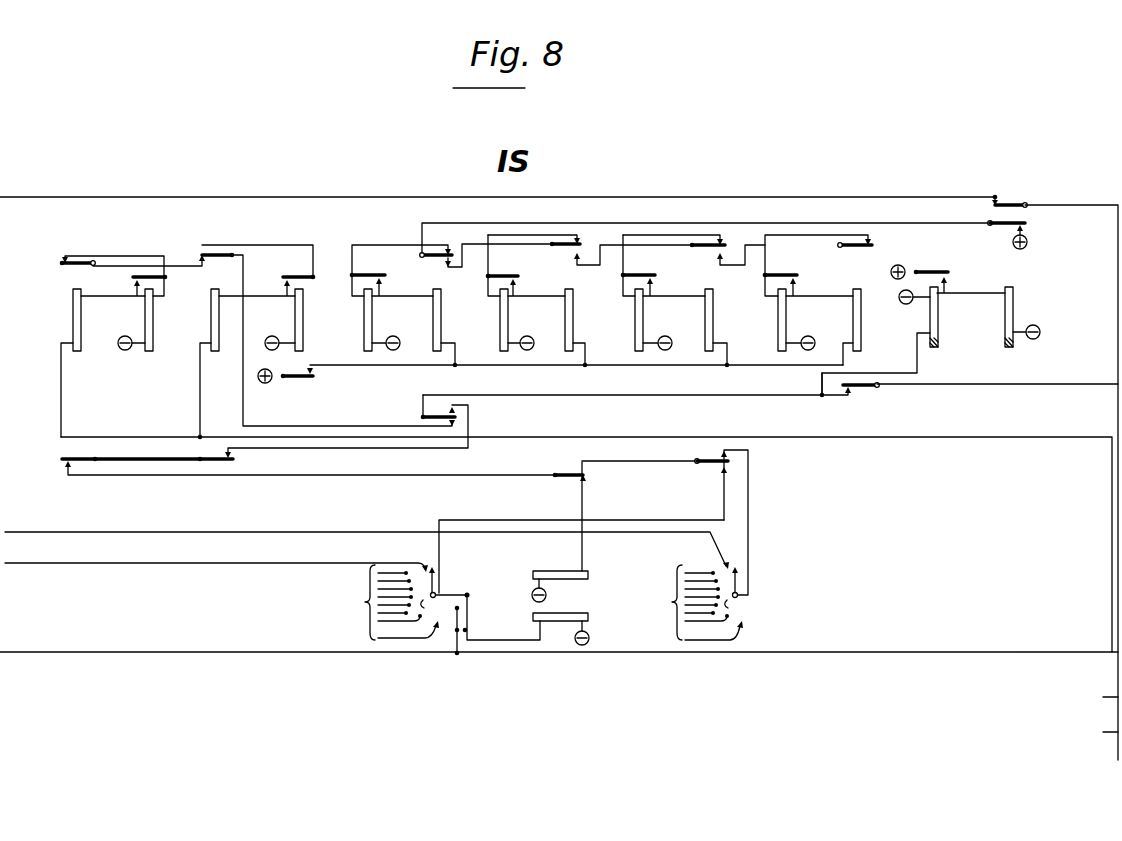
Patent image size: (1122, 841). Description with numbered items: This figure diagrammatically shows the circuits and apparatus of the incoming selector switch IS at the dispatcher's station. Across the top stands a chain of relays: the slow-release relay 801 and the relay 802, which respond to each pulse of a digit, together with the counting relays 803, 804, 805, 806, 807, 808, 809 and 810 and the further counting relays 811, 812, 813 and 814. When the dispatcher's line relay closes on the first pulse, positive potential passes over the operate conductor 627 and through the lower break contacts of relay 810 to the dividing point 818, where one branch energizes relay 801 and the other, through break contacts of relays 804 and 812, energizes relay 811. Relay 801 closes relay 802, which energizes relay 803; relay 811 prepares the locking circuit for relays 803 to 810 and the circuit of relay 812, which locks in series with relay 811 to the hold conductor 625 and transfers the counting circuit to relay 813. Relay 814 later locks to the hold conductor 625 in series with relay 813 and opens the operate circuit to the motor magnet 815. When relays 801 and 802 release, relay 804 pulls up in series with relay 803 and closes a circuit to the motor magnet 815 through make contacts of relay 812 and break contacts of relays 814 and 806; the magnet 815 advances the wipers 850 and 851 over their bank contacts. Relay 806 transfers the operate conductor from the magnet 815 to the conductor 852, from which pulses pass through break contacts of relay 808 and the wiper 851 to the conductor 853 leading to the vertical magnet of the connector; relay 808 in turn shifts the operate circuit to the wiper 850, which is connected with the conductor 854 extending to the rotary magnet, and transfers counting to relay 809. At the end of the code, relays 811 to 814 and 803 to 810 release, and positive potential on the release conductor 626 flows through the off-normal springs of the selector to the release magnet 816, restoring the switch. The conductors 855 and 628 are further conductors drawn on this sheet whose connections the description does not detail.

The relay 801 is at (939, 311).
The relay 802 is at (1014, 311).
The counting relay 803 is at (373, 319).
The counting relay 804 is at (442, 319).
The counting relay 805 is at (509, 319).
The counting relay 806 is at (574, 319).
The counting relay 807 is at (644, 319).
The counting relay 808 is at (714, 319).
The counting relay 809 is at (787, 319).
The counting relay 810 is at (871, 316).
The counting relay 811 is at (304, 319).
The counting relay 812 is at (211, 330).
The counting relay 813 is at (154, 319).
The counting relay 814 is at (82, 319).
The motor magnet 815 is at (589, 572).
The release magnet 816 is at (558, 613).
The dividing point 818 is at (821, 396).
The wiper 850 is at (693, 602).
The wiper 851 is at (403, 610).
The conductor 852 is at (622, 463).
The conductor 853 is at (14, 563).
The conductor 854 is at (17, 532).
The conductor 855 is at (15, 197).
The hold conductor 625 is at (518, 437).
The release conductor 626 is at (15, 652).
The operate conductor 627 is at (1093, 734).
The conductor 628 is at (1093, 699).